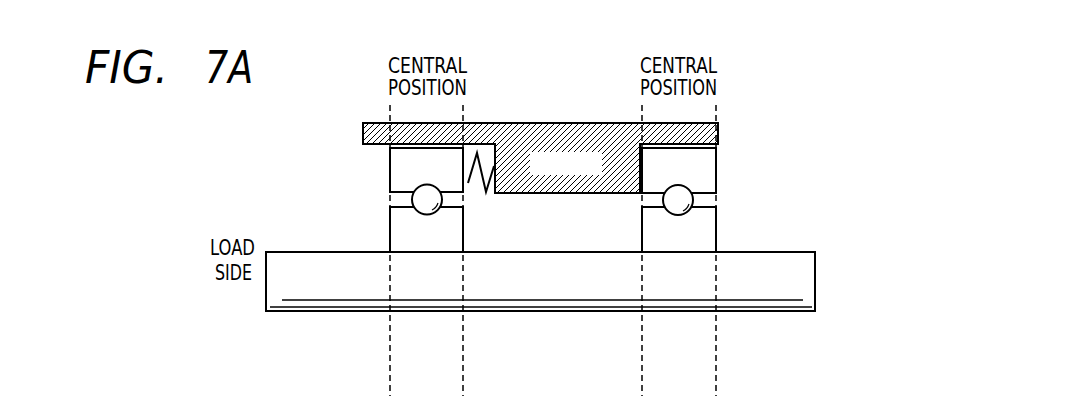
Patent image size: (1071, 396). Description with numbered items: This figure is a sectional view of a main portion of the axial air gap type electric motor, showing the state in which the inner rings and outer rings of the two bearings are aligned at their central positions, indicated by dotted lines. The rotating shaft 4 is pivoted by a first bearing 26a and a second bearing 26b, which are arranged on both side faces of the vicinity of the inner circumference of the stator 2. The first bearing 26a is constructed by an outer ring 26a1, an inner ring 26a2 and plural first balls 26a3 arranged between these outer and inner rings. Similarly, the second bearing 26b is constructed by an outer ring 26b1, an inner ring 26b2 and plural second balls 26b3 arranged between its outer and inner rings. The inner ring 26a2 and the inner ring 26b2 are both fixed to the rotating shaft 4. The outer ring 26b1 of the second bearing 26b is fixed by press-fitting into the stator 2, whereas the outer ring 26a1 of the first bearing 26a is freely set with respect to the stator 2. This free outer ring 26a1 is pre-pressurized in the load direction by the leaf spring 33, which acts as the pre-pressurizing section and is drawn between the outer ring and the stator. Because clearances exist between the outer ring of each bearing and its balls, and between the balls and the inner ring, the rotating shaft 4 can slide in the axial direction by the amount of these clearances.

The stator 2 is at (523, 123).
The rotating shaft 4 is at (816, 278).
The first bearing 26a is at (325, 209).
The outer ring 26a1 is at (390, 162).
The inner ring 26a2 is at (390, 229).
The first balls 26a3 is at (412, 201).
The second bearing 26b is at (722, 223).
The outer ring 26b1 is at (716, 148).
The inner ring 26b2 is at (716, 218).
The second balls 26b3 is at (690, 203).
The leaf spring 33 is at (486, 192).